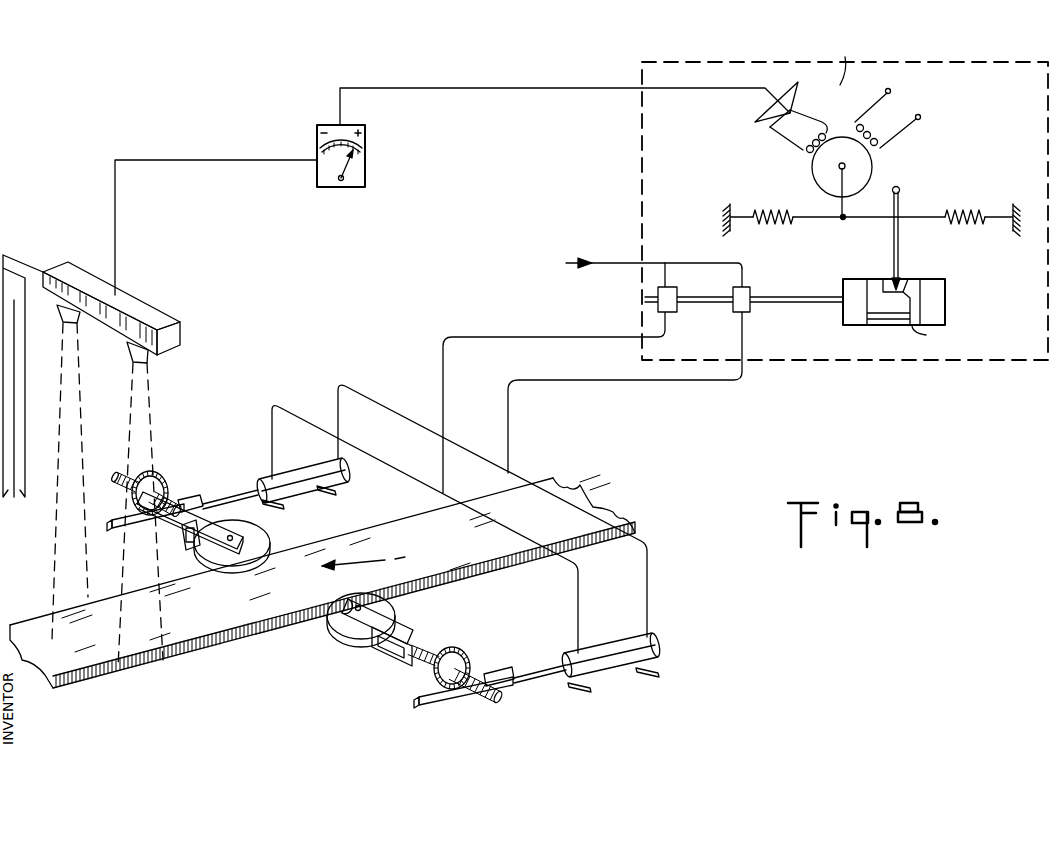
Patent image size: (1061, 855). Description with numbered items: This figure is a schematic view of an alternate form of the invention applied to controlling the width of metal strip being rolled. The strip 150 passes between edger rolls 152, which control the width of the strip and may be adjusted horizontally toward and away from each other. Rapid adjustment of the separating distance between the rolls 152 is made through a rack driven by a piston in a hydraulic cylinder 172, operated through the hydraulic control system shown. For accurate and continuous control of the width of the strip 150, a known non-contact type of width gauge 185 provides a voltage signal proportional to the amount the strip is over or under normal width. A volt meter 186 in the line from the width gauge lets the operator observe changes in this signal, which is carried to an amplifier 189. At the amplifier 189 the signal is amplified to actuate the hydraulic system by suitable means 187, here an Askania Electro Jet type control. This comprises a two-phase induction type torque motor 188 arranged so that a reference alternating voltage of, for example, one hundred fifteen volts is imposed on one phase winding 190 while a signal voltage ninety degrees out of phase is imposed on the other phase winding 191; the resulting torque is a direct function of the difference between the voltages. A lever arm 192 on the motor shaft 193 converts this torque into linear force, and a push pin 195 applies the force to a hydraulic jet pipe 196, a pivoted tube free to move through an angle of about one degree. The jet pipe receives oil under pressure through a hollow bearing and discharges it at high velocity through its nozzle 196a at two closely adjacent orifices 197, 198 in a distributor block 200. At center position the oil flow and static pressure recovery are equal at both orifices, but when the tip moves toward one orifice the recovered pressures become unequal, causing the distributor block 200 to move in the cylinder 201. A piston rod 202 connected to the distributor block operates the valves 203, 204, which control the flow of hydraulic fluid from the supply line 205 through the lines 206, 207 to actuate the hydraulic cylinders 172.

The strip 150 is at (228, 610).
The edger rolls 152 is at (258, 535).
The hydraulic cylinder 172 is at (302, 477).
The width gauge 185 is at (143, 315).
The volt meter 186 is at (317, 123).
The means for actuating the hydraulic system 187 is at (642, 122).
The torque motor 188 is at (849, 60).
The amplifier 189 is at (786, 82).
The phase winding 190 is at (908, 130).
The phase winding 191 is at (783, 135).
The lever arm 192 is at (841, 203).
The motor shaft 193 is at (846, 166).
The push pin 195 is at (866, 222).
The hydraulic jet pipe 196 is at (899, 243).
The nozzle 196a is at (903, 280).
The orifice 197 is at (900, 285).
The orifice 198 is at (889, 283).
The distributor block 200 is at (933, 336).
The cylinder 201 is at (937, 302).
The piston rod 202 is at (805, 298).
The valve 203 is at (750, 292).
The valve 204 is at (674, 290).
The supply line 205 is at (613, 263).
The line 206 is at (597, 382).
The line 207 is at (548, 337).